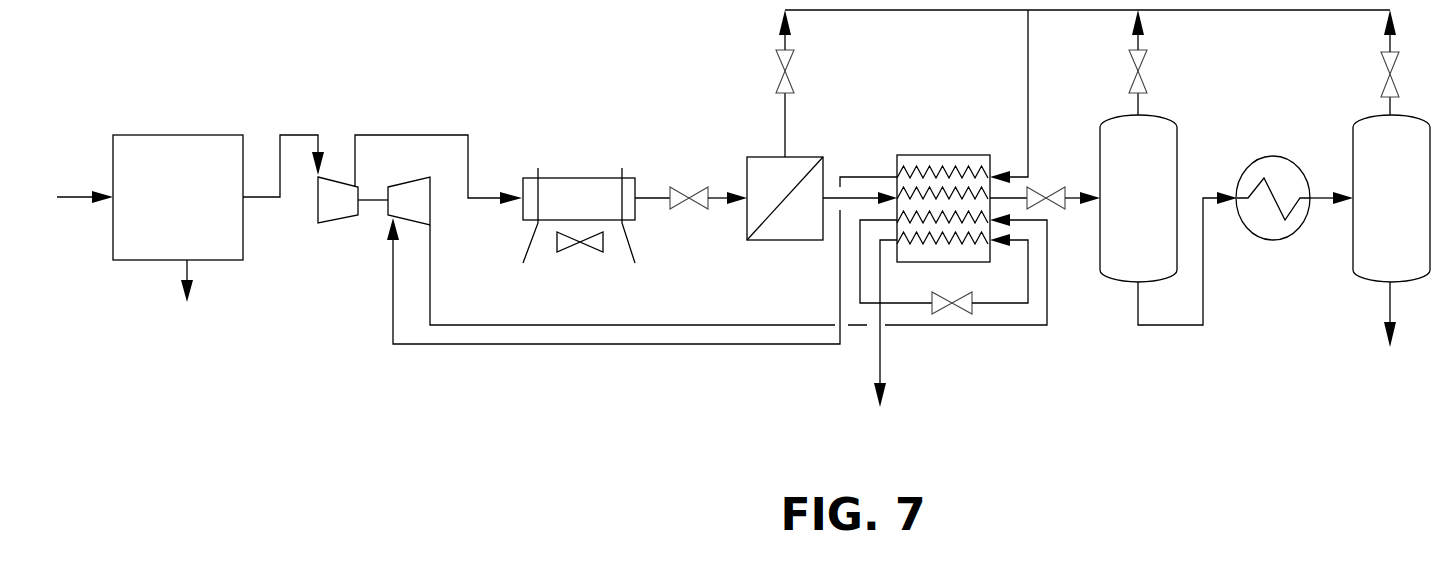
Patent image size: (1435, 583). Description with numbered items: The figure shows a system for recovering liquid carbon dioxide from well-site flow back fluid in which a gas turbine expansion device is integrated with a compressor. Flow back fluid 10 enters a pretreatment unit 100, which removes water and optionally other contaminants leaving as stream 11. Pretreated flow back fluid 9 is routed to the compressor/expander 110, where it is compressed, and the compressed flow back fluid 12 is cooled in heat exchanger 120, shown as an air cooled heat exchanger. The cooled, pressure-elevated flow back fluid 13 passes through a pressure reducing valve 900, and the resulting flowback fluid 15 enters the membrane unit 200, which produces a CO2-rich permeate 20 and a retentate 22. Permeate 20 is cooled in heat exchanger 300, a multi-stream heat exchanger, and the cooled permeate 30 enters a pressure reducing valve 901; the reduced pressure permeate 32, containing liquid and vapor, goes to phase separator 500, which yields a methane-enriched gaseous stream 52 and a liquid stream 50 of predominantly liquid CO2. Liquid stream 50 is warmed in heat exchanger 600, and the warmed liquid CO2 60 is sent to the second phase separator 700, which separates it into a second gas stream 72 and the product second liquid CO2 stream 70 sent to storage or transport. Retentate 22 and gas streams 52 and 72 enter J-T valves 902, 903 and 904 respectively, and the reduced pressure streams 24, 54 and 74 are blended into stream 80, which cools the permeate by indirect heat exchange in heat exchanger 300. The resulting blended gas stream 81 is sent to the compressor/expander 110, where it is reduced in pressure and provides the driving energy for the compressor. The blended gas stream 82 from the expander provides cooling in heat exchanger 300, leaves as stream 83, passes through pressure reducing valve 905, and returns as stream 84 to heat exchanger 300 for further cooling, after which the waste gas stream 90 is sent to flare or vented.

The flow back fluid 10 is at (85, 184).
The pretreatment unit 100 is at (178, 197).
The contaminant stream 11 is at (168, 281).
The pretreated flow back fluid 9 is at (283, 166).
The compressor/expander 110 is at (381, 148).
The compressed flow back fluid 12 is at (438, 169).
The heat exchanger 120 is at (583, 187).
The flow back fluid 13 is at (652, 181).
The pressure reducing valve 900 is at (688, 214).
The flowback fluid 15 is at (727, 182).
The membrane unit 200 is at (772, 229).
The retentate 22 is at (764, 125).
The J-T valve 902 is at (762, 71).
The reduced pressure stream 24 is at (1067, 30).
The permeate 20 is at (860, 193).
The heat exchanger 300 is at (942, 168).
The cooled permeate 30 is at (1008, 190).
The pressure reducing valve 901 is at (1053, 185).
The reduced pressure permeate 32 is at (1082, 216).
The stream 80 is at (1009, 96).
The blended gas stream 81 is at (628, 260).
The blended gas stream 82 is at (738, 269).
The heat exchanger outlet stream 83 is at (896, 261).
The heat exchanger recycle stream 84 is at (1000, 268).
The pressure reducing valve 905 is at (952, 290).
The waste gas stream 90 is at (880, 340).
The phase separator 500 is at (1138, 198).
The gaseous stream 52 is at (1160, 100).
The J-T valve 903 is at (1114, 71).
The reduced pressure stream 54 is at (1157, 30).
The liquid stream 50 is at (1187, 258).
The heat exchanger 600 is at (1273, 198).
The warmed liquid CO2 60 is at (1331, 181).
The second phase separator 700 is at (1391, 198).
The second gas stream 72 is at (1406, 102).
The J-T valve 904 is at (1367, 74).
The reduced pressure stream 74 is at (1403, 32).
The second liquid CO2 stream 70 is at (1403, 314).